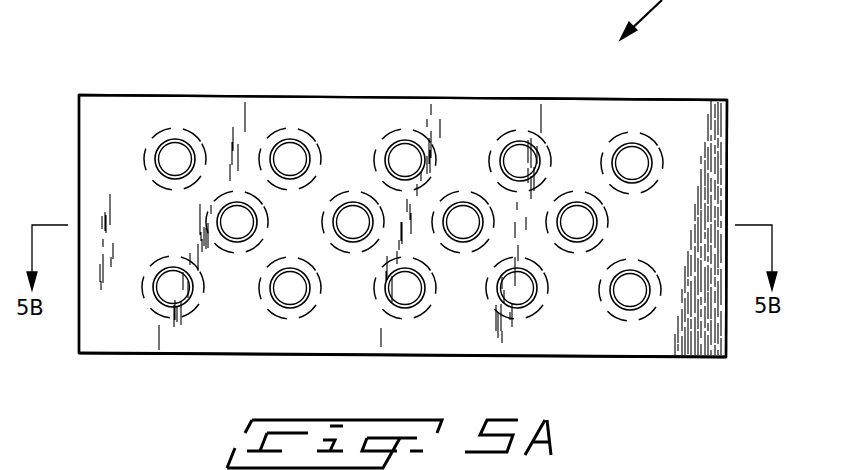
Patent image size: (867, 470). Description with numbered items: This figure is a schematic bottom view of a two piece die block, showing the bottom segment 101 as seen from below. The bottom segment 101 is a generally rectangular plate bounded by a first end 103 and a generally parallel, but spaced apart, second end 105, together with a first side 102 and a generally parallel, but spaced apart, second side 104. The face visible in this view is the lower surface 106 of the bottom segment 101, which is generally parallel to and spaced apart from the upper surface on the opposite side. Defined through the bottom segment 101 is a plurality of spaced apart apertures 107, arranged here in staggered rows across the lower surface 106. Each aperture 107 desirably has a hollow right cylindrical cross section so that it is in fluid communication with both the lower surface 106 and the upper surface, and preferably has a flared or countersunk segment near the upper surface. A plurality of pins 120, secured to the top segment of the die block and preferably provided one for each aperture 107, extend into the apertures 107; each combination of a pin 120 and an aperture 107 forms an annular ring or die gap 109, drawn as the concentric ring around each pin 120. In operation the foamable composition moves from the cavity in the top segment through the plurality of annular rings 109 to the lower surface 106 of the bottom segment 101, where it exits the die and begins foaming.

The bottom segment 101 is at (662, 332).
The first side 102 is at (523, 357).
The first end 103 is at (754, 67).
The second side 104 is at (250, 96).
The second end 105 is at (78, 323).
The lower surface 106 is at (120, 117).
The aperture 107 is at (504, 140).
The annular ring or die gap 109 is at (548, 146).
The pin 120 is at (416, 296).